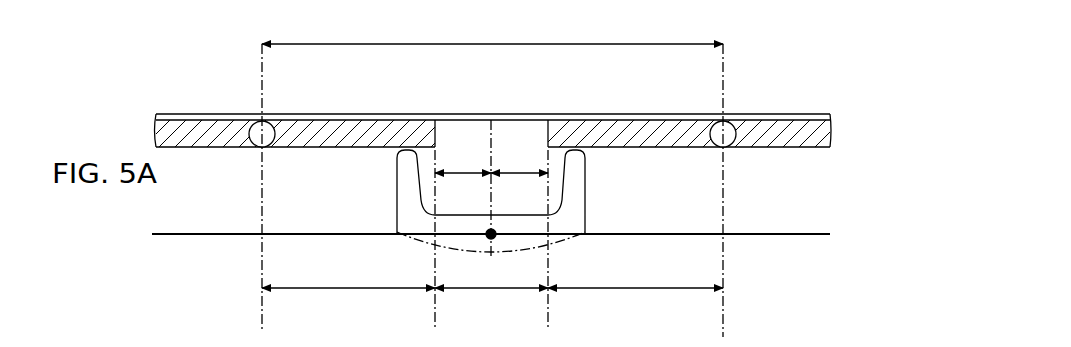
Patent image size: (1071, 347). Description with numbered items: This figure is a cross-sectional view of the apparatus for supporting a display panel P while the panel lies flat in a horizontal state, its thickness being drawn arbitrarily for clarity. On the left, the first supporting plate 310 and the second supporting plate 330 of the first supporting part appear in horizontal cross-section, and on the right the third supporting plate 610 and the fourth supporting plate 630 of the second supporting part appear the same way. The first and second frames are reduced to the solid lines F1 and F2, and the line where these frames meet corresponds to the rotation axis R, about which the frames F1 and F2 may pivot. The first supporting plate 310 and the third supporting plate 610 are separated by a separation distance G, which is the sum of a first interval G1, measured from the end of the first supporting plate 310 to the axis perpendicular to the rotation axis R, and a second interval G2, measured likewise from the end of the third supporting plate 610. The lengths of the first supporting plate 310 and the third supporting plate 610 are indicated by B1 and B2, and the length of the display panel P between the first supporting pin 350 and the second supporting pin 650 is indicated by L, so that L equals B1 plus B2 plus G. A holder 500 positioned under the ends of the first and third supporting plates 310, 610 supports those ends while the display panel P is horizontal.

The first supporting plate 310 is at (388, 126).
The second supporting plate 330 is at (205, 127).
The first supporting pin 350 is at (272, 124).
The holder 500 is at (397, 212).
The third supporting plate 610 is at (645, 141).
The fourth supporting plate 630 is at (788, 141).
The second supporting pin 650 is at (711, 124).
The display panel P is at (786, 118).
The rotation axis R is at (494, 239).
The first frame F1 is at (188, 232).
The second frame F2 is at (778, 237).
The length of the display panel L is at (492, 29).
The separation distance G is at (491, 302).
The first interval G1 is at (463, 189).
The second interval G2 is at (519, 189).
The length of the first supporting plate B1 is at (348, 299).
The length of the third supporting plate B2 is at (635, 299).